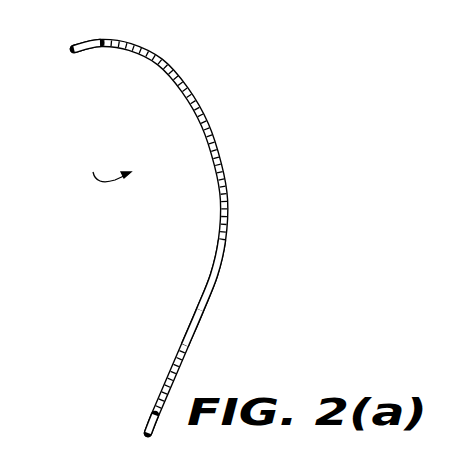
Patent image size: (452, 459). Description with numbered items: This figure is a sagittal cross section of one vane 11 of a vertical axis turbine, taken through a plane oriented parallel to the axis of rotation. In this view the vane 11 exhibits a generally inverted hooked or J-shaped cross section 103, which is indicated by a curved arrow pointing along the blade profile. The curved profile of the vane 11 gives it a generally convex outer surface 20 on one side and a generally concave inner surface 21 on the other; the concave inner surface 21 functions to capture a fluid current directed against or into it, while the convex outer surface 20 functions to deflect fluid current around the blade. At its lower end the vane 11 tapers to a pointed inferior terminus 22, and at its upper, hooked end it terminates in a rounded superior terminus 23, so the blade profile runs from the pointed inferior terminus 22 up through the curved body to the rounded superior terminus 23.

The vane 11 is at (203, 112).
The convex outer surface 20 is at (218, 282).
The concave inner surface 21 is at (190, 325).
The pointed inferior terminus 22 is at (143, 432).
The rounded superior terminus 23 is at (100, 38).
The J-shaped cross section 103 is at (106, 167).